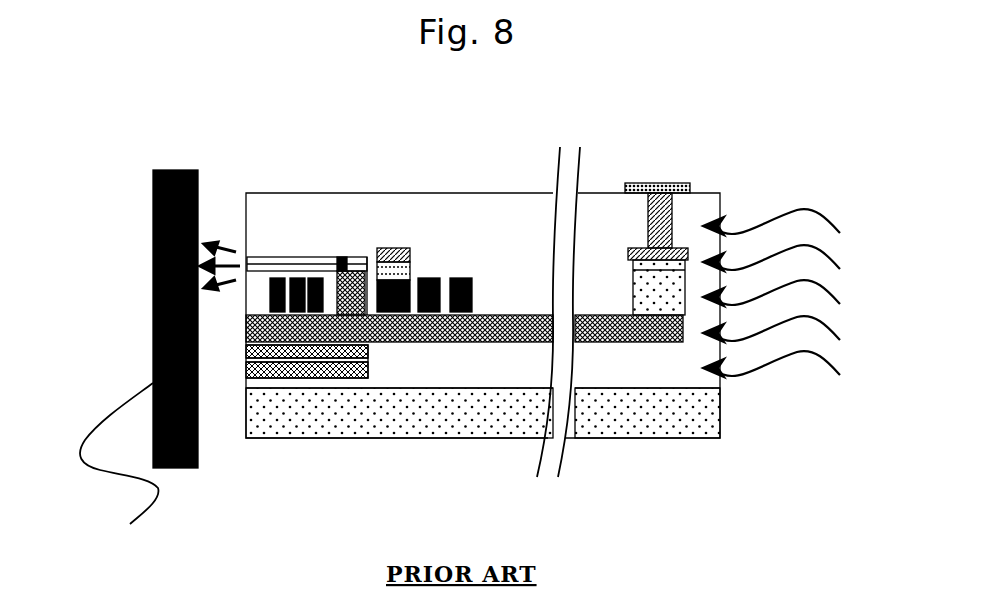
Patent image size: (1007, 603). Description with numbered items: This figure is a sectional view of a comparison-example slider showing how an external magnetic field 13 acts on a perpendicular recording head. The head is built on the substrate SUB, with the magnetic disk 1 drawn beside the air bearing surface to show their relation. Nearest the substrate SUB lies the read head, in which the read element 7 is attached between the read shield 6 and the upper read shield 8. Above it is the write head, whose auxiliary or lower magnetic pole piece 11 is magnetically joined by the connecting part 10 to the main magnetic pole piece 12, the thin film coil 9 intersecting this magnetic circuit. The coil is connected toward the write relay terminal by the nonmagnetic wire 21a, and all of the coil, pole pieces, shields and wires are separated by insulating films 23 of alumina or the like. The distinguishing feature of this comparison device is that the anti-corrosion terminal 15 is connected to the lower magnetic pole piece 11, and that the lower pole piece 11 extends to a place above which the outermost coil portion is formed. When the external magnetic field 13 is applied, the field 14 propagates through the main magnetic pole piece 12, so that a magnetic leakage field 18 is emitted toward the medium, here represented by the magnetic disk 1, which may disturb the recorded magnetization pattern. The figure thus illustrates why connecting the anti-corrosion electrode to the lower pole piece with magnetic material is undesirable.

The magnetic disk 1 is at (119, 470).
The magnetic leakage field 18 is at (222, 244).
The thin film coil 9 is at (262, 273).
The main magnetic pole piece 12 is at (338, 262).
The connecting part 10 is at (352, 283).
The wire 21a is at (397, 249).
The insulating films 23 is at (450, 222).
The anti-corrosion terminal 15 is at (672, 188).
The external magnetic field 13 is at (771, 320).
The external magnetic field (propagating field) 14 is at (472, 330).
The auxiliary (lower) magnetic pole piece 11 is at (330, 330).
The read element 7 is at (253, 374).
The upper read shield 8 is at (300, 372).
The read shield 6 is at (343, 372).
The substrate SUB is at (660, 406).